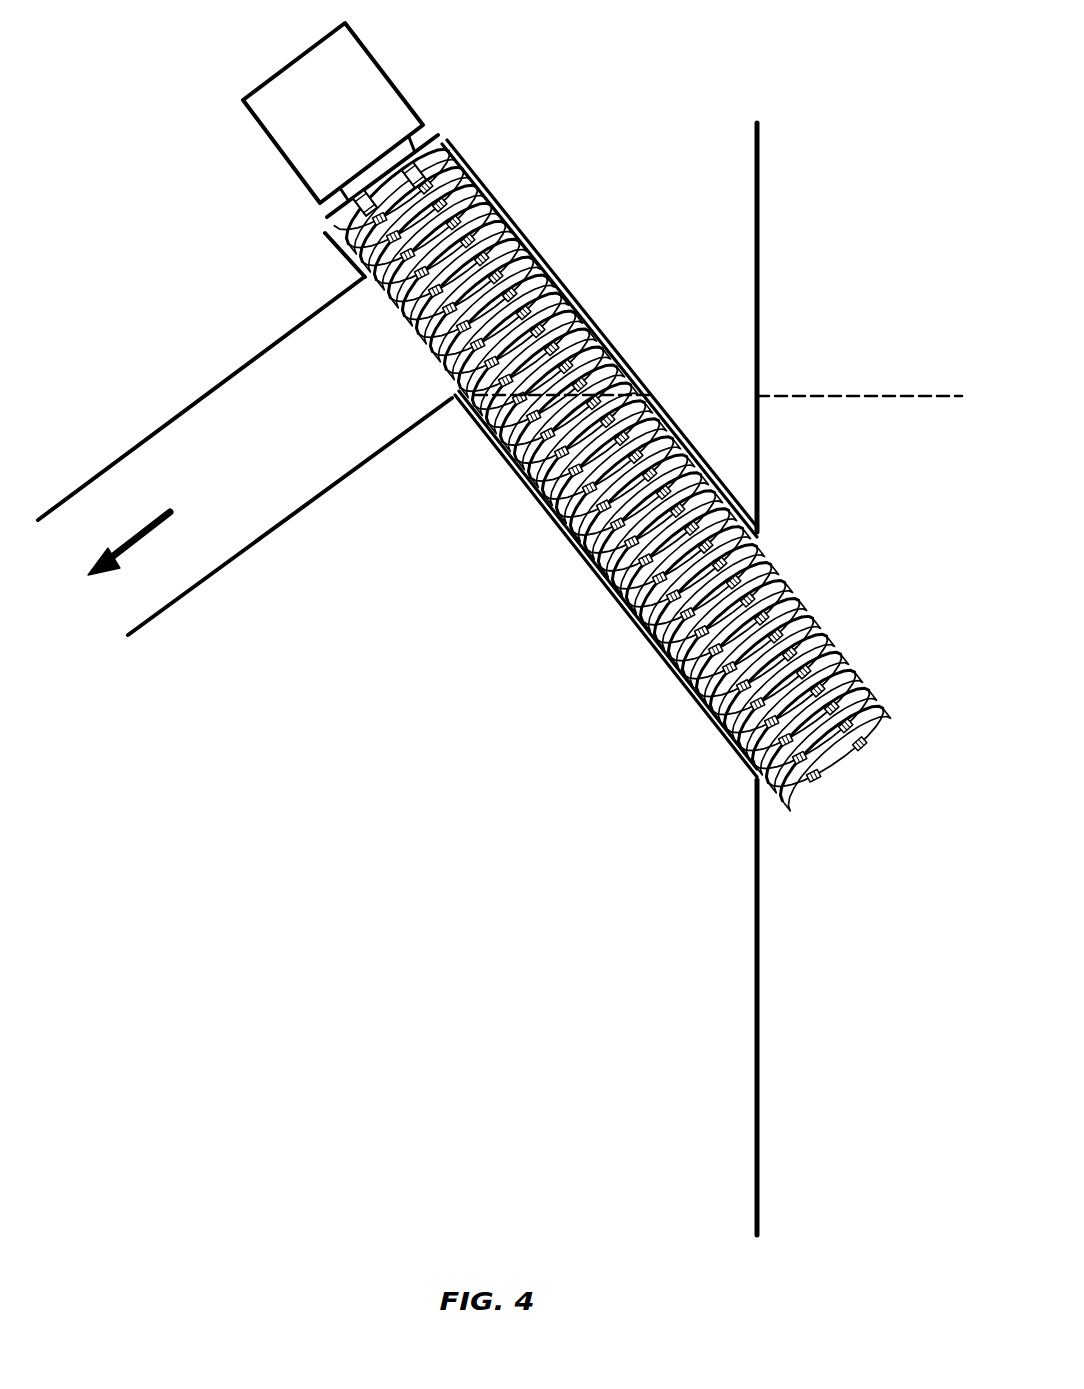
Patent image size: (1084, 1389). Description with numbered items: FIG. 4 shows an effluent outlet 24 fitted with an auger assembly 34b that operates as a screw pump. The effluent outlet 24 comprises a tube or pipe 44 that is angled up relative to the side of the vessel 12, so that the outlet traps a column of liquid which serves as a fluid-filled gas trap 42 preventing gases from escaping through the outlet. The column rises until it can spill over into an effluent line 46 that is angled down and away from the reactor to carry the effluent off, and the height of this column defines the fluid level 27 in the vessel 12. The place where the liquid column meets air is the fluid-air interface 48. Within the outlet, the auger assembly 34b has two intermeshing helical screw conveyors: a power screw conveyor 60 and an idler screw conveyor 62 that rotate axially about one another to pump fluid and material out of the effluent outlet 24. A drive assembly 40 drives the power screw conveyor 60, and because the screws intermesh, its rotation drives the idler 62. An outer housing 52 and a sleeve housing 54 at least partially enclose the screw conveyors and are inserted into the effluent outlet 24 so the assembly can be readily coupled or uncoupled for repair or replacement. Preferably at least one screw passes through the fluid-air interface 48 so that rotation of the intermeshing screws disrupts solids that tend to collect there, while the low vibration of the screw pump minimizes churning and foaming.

The effluent outlet 24 is at (272, 125).
The power screw conveyor 60 is at (437, 137).
The drive assembly 40 is at (333, 113).
The vessel 12 is at (755, 170).
The sleeve housing 54 is at (523, 227).
The auger assembly 34b is at (555, 272).
The outer housing 52 is at (599, 338).
The tube or pipe 44 is at (541, 458).
The fluid level 27 is at (838, 395).
The idler screw conveyor 62 is at (360, 207).
The effluent line 46 is at (228, 373).
The fluid-air interface 48 is at (497, 400).
The fluid-filled gas trap 42 is at (548, 624).